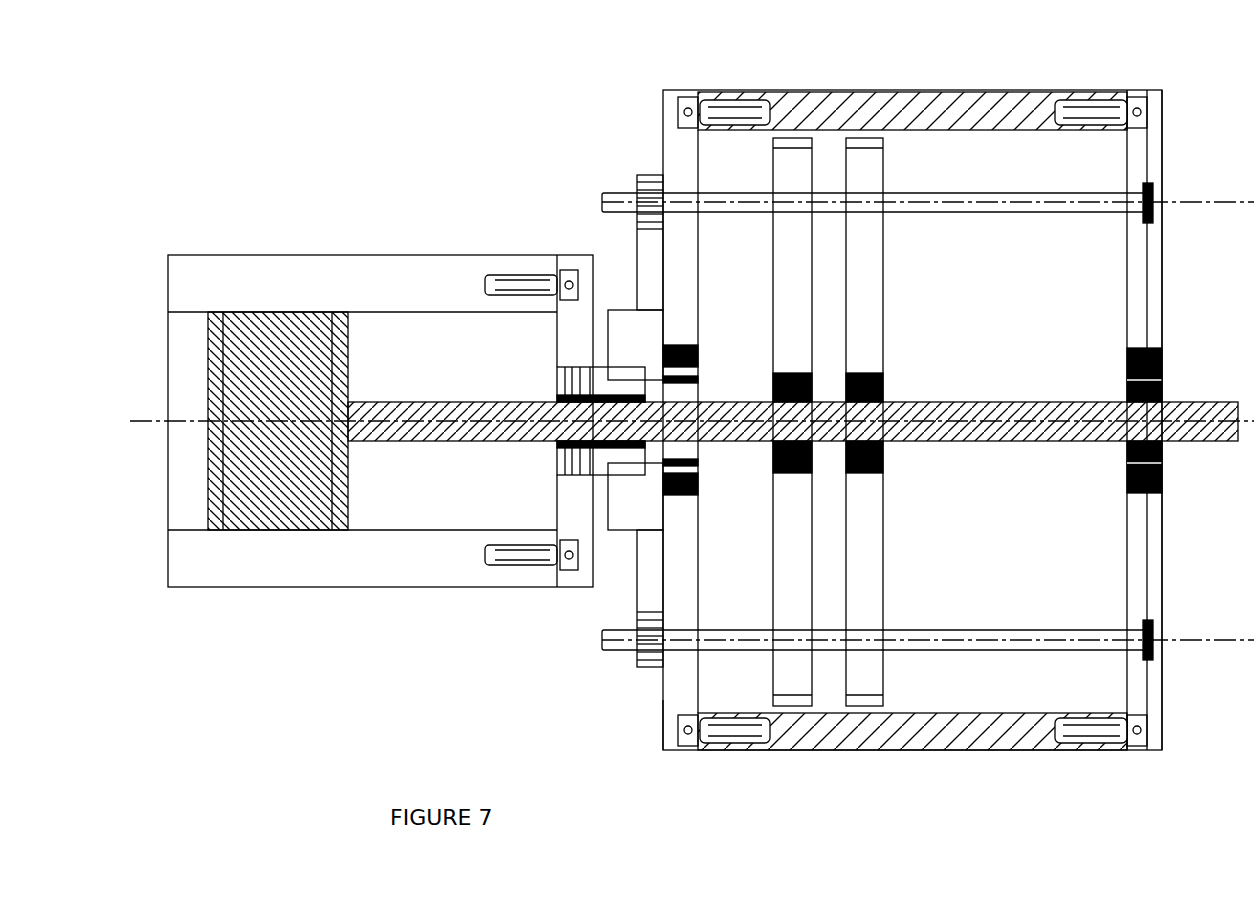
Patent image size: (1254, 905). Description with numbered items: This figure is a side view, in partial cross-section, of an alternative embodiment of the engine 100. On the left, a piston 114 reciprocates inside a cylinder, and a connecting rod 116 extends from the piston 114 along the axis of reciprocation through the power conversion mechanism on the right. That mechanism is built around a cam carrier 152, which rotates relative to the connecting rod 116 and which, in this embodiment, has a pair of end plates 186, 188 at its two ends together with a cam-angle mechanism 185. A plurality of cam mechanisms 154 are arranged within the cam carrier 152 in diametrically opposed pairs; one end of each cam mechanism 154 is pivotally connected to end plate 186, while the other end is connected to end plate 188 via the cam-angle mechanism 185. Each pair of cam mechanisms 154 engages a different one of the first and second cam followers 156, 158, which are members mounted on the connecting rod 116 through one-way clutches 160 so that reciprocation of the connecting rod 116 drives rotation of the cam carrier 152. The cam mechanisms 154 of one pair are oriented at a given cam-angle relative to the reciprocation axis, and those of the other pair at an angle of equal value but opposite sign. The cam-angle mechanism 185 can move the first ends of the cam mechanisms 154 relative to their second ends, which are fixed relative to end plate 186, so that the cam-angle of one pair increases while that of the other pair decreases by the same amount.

The engine 100 is at (517, 113).
The piston 114 is at (300, 335).
The connecting rod 116 is at (988, 400).
The cam carrier 152 is at (980, 90).
The cam mechanism 154 is at (988, 200).
The first cam follower 156 is at (793, 293).
The second cam follower 158 is at (862, 296).
The one-way clutch 160 is at (773, 370).
The cam-angle mechanism 185 is at (638, 587).
The end plate 186 is at (1160, 752).
The end plate 188 is at (670, 740).